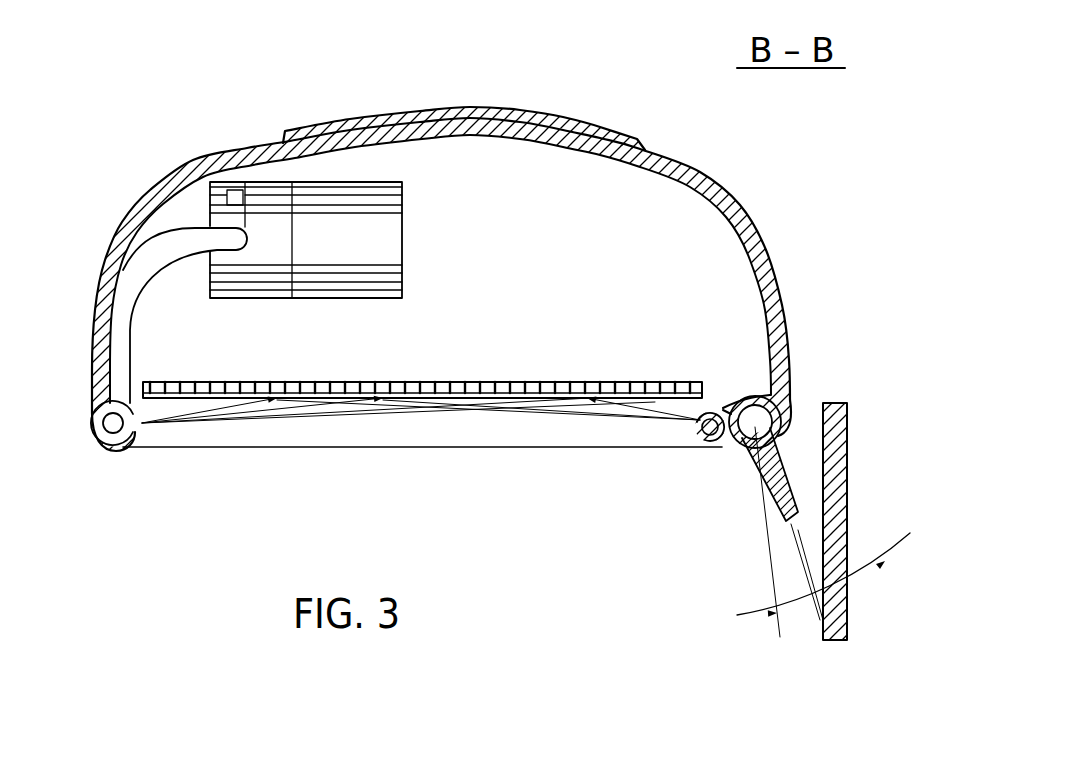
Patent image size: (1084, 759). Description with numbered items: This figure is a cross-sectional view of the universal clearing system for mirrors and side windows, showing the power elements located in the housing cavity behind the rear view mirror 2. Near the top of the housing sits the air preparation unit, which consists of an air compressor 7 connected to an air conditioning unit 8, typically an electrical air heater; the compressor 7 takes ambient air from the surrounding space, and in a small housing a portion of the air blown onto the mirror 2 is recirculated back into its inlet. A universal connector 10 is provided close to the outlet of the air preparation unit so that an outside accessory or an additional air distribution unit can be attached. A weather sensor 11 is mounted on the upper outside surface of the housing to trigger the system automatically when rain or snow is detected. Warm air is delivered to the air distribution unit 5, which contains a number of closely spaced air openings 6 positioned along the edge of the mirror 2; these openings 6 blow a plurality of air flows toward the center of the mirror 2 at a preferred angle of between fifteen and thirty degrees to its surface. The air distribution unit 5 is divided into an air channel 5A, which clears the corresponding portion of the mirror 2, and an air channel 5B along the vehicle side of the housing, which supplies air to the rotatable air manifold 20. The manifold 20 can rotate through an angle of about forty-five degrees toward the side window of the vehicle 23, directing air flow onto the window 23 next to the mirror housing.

The rear view mirror 2 is at (476, 382).
The air distribution unit 5 is at (114, 430).
The air channel 5A is at (712, 436).
The air channel 5B is at (745, 442).
The air openings 6 is at (143, 427).
The air compressor 7 is at (350, 228).
The air conditioning unit 8 is at (273, 230).
The universal connector 10 is at (233, 217).
The weather sensor 11 is at (563, 128).
The rotatable air manifold 20 is at (773, 393).
The side window of the vehicle 23 is at (840, 483).